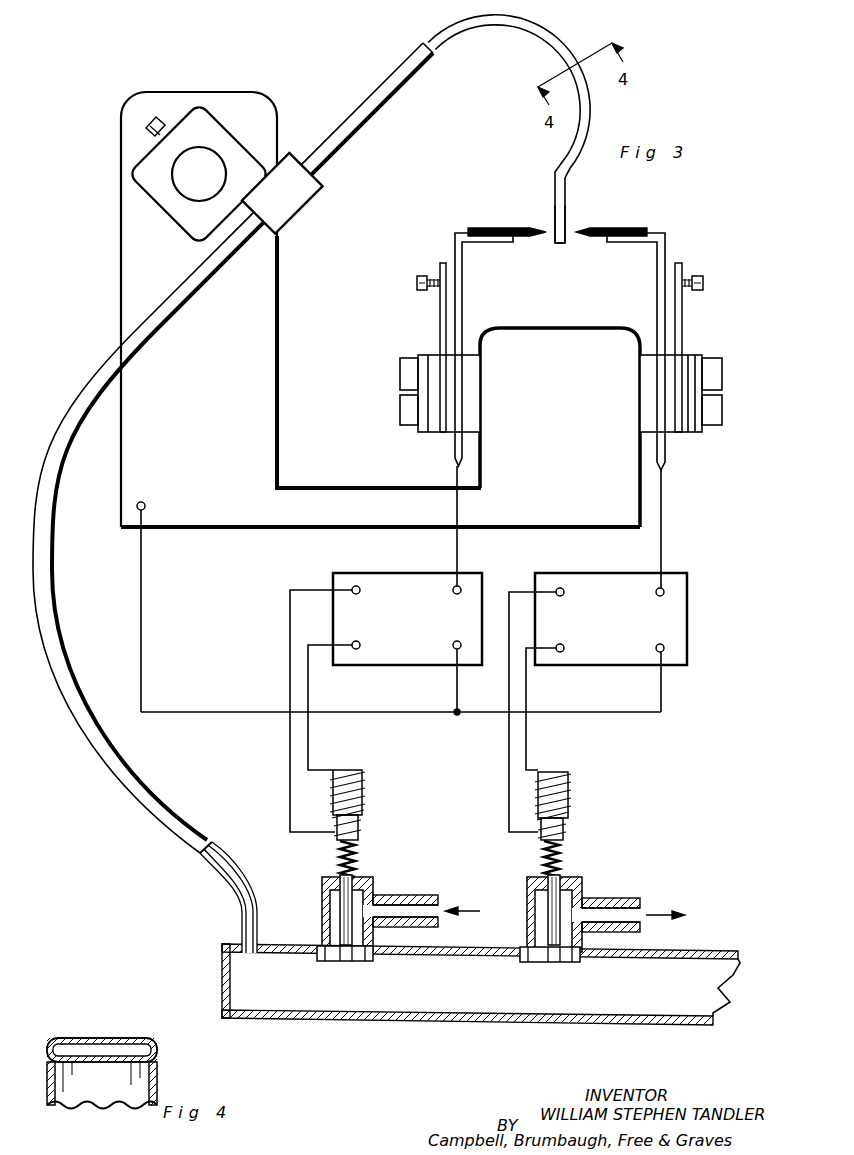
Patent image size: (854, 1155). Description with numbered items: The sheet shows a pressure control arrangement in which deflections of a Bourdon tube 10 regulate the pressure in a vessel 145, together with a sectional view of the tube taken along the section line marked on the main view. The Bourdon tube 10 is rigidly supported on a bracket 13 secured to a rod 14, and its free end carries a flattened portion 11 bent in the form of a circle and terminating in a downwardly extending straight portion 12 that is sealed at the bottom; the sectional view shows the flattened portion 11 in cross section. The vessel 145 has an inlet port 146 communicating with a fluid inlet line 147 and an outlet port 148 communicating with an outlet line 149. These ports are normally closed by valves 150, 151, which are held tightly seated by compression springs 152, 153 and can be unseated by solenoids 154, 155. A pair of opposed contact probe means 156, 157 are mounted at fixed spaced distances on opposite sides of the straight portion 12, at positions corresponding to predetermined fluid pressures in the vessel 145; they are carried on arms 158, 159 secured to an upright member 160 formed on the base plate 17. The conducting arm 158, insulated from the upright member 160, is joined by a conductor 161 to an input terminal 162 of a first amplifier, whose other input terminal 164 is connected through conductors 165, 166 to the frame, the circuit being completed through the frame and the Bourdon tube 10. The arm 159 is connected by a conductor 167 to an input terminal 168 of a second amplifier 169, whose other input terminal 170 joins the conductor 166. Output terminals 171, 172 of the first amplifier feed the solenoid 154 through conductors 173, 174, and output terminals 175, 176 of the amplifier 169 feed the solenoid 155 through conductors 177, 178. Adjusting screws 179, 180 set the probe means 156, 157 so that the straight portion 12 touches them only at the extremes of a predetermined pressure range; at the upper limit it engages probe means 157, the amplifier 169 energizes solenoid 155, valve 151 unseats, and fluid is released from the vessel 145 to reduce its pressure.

In FIG. 3, the Bourdon tube 10 is at (112, 363).
In FIG. 3, the flattened portion 11 is at (546, 22).
In FIG. 4, the flattened portion 11 is at (106, 1038).
In FIG. 3, the straight portion 12 is at (565, 216).
In FIG. 3, the bracket 13 is at (178, 215).
In FIG. 3, the rod 14 is at (178, 180).
In FIG. 3, the base plate 17 is at (262, 530).
In FIG. 3, the vessel 145 is at (476, 1000).
In FIG. 3, the inlet port 146 is at (322, 946).
In FIG. 3, the fluid inlet line 147 is at (398, 902).
In FIG. 3, the outlet port 148 is at (528, 947).
In FIG. 3, the outlet line 149 is at (600, 902).
In FIG. 3, the valve 150 is at (366, 964).
In FIG. 3, the valve 151 is at (567, 964).
In FIG. 3, the compression spring 152 is at (357, 864).
In FIG. 3, the compression spring 153 is at (563, 866).
In FIG. 3, the solenoid 154 is at (363, 806).
In FIG. 3, the solenoid 155 is at (570, 796).
In FIG. 3, the contact probe means 156 is at (540, 228).
In FIG. 3, the contact probe means 157 is at (612, 228).
In FIG. 3, the arm 158 is at (462, 302).
In FIG. 3, the arm 159 is at (657, 288).
In FIG. 3, the upright member 160 is at (592, 334).
In FIG. 3, the conductor 161 is at (456, 550).
In FIG. 3, the input terminal 162 is at (461, 587).
In FIG. 3, the input terminal 164 is at (461, 650).
In FIG. 3, the conductor 165 is at (456, 687).
In FIG. 3, the conductor 166 is at (426, 714).
In FIG. 3, the conductor 167 is at (662, 510).
In FIG. 3, the input terminal 168 is at (664, 589).
In FIG. 3, the amplifier 169 is at (688, 608).
In FIG. 3, the input terminal 170 is at (664, 649).
In FIG. 3, the output terminal 171 is at (358, 586).
In FIG. 3, the output terminal 172 is at (360, 650).
In FIG. 3, the conductor 173 is at (290, 798).
In FIG. 3, the conductor 174 is at (309, 755).
In FIG. 3, the output terminal 175 is at (561, 588).
In FIG. 3, the output terminal 176 is at (562, 652).
In FIG. 3, the conductor 177 is at (509, 800).
In FIG. 3, the conductor 178 is at (527, 748).
In FIG. 3, the adjusting screw 179 is at (418, 290).
In FIG. 3, the adjusting screw 180 is at (703, 284).